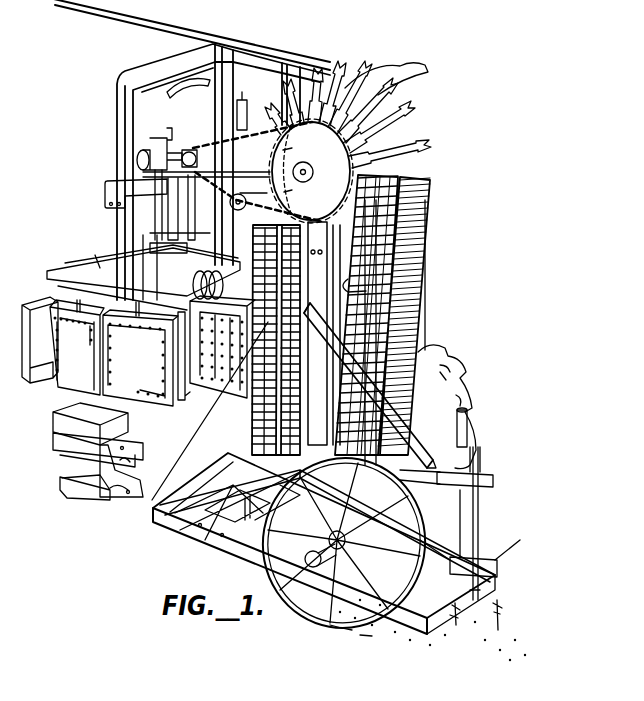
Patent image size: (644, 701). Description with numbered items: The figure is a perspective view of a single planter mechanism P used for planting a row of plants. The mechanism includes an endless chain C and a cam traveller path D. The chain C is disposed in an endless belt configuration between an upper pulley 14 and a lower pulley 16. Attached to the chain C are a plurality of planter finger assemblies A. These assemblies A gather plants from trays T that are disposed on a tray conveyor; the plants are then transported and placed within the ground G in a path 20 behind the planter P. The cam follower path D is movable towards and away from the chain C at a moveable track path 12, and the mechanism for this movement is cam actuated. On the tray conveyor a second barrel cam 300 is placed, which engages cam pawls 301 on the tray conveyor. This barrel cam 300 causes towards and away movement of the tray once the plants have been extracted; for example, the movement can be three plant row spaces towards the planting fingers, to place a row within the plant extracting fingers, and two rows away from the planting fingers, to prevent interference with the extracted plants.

The moveable track path 12 is at (150, 486).
The upper pulley 14 is at (310, 122).
The lower pulley 16 is at (315, 513).
The path 20 is at (495, 625).
The second barrel cam 300 is at (225, 250).
The cam pawls 301 is at (136, 308).
The planter finger assemblies A is at (354, 105).
The endless chain C is at (366, 291).
The cam traveller path D is at (396, 165).
The ground G is at (522, 623).
The planter mechanism P is at (437, 231).
The trays T is at (128, 300).